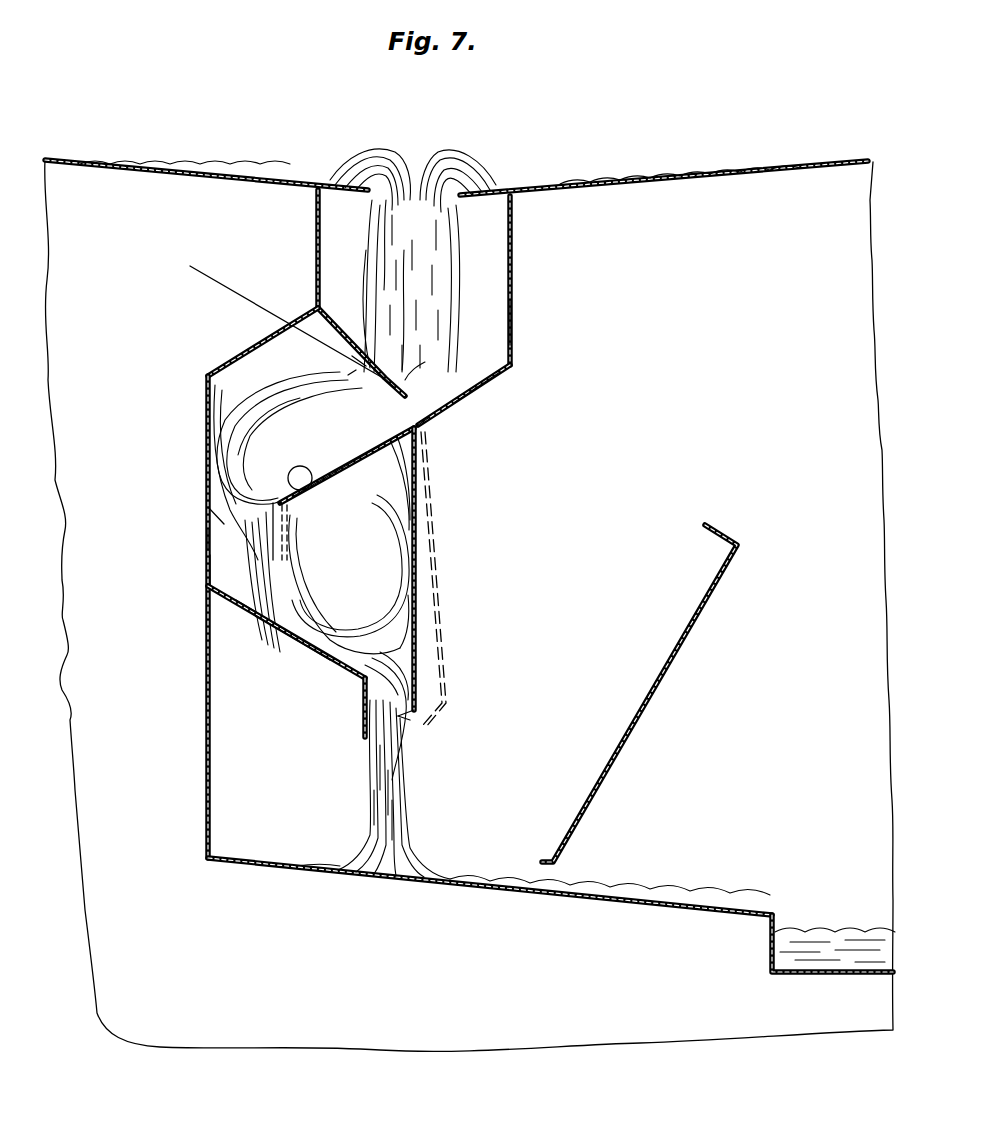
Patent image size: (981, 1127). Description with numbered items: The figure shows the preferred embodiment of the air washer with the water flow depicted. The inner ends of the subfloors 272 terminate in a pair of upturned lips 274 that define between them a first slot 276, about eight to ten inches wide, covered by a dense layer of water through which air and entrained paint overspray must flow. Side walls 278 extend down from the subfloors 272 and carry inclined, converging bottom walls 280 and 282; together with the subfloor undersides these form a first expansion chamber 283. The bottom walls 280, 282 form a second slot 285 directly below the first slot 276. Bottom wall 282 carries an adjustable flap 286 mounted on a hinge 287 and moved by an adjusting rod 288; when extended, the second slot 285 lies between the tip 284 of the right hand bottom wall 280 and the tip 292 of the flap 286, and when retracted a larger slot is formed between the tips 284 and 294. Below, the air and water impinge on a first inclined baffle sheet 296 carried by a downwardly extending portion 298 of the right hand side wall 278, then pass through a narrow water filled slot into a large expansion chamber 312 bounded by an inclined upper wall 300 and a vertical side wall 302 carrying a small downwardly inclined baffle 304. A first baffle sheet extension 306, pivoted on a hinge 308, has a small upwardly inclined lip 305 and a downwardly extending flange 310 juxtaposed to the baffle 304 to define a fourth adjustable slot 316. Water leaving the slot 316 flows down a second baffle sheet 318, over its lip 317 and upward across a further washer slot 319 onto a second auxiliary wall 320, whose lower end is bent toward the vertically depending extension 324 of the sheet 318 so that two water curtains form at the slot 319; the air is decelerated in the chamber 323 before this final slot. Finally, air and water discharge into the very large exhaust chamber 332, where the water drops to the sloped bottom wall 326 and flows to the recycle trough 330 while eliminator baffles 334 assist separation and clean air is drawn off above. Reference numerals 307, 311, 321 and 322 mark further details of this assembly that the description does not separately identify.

The subfloors 272 is at (192, 175).
The upturned lips 274 is at (366, 182).
The first slot 276 is at (432, 220).
The side walls 278 is at (316, 215).
The right hand bottom wall 280 is at (462, 350).
The bottom wall 282 is at (332, 332).
The first expansion chamber 283 is at (438, 300).
The tip 284 is at (492, 378).
The second washer slot 285 is at (413, 373).
The adjustable flap 286 is at (364, 384).
The hinge 287 is at (423, 311).
The adjusting rod 288 is at (218, 282).
The tip of flap 292 is at (438, 418).
The tip of bottom wall 294 is at (372, 362).
The first inclined baffle sheet 296 is at (470, 394).
The downwardly extending portion 298 is at (513, 344).
The inclined upper wall 300 is at (240, 362).
The wall 302 is at (205, 430).
The small baffle 304 is at (206, 538).
The lip 305 is at (326, 495).
The first baffle sheet extension 306 is at (345, 463).
The wall portion 307 is at (169, 541).
The hinge 308 is at (422, 430).
The downwardly extending flange 310 is at (290, 540).
The baffle line 311 is at (352, 446).
The expansion chamber 312 is at (300, 450).
The fourth adjustable slot 316 is at (258, 530).
The lip 317 is at (350, 676).
The second inclined baffle sheet 318 is at (305, 645).
The further washer slot 319 is at (392, 687).
The second auxiliary wall 320 is at (418, 623).
The wall portion 321 is at (206, 563).
The foot 322 is at (402, 722).
The chamber 323 is at (380, 608).
The vertically depending extension 324 is at (362, 712).
The sloped bottom wall 326 is at (512, 910).
The recycle trough 330 is at (800, 945).
The exhaust chamber 332 is at (800, 370).
The eliminator baffles 334 is at (655, 690).